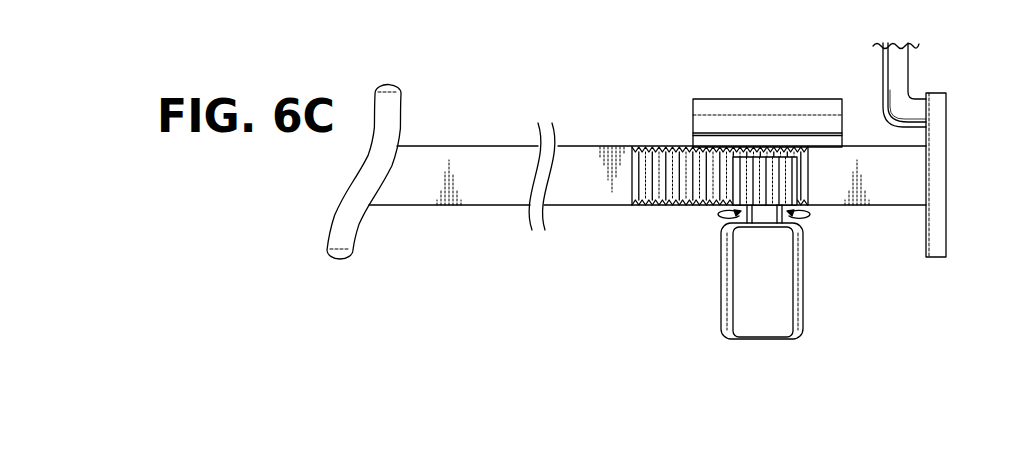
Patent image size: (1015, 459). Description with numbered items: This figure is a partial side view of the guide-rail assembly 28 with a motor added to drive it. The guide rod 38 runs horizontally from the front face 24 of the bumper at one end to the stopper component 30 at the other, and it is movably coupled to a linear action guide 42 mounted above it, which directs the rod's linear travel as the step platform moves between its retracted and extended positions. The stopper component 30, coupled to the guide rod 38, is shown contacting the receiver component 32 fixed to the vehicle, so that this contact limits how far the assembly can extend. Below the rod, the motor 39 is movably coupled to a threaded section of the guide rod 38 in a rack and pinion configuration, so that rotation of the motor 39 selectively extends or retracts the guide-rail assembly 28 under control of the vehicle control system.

The front face 24 is at (350, 177).
The guide-rail assembly 28 is at (623, 106).
The stopper component 30 is at (947, 178).
The receiver component 32 is at (891, 72).
The guide rod 38 is at (597, 181).
The motor 39 is at (720, 305).
The linear action guide 42 is at (722, 99).